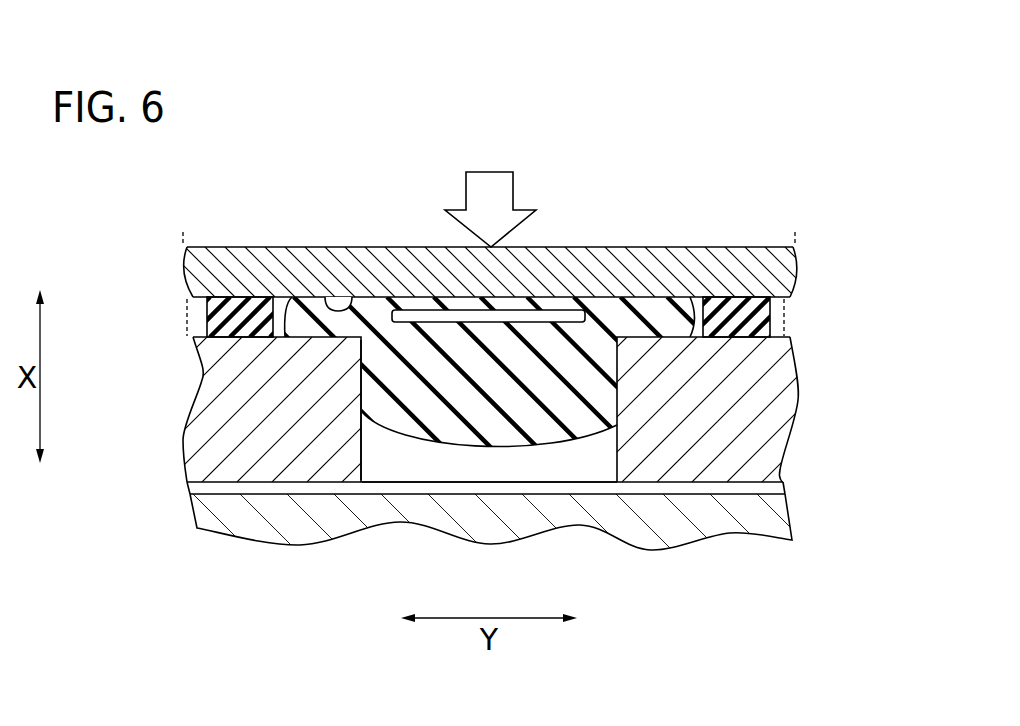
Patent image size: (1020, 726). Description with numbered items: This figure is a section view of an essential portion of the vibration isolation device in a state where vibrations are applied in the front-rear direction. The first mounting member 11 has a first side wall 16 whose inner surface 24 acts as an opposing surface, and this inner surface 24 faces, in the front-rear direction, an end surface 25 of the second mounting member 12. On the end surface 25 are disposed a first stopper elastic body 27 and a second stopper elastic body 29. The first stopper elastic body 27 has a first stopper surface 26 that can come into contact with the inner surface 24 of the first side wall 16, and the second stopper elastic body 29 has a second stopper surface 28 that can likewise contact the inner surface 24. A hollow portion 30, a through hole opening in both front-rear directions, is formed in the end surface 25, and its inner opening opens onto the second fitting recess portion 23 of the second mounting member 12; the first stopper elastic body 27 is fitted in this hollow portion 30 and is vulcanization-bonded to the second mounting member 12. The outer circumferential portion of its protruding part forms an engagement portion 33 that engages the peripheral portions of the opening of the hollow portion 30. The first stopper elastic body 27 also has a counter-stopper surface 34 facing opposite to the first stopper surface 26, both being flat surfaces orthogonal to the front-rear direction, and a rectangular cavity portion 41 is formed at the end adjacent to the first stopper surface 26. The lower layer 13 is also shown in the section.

The first mounting member 11 is at (565, 246).
The second mounting member 12 is at (797, 408).
The support substrate 13 is at (797, 518).
The first side wall 16 is at (611, 247).
The second fitting recess portion 23 is at (770, 502).
The inner surface 24 is at (334, 292).
The end surface 25 is at (199, 337).
The first stopper surface 26 is at (366, 325).
The first stopper elastic body 27 is at (350, 382).
The second stopper surface 28 is at (738, 296).
The second stopper elastic body 29 is at (246, 284).
The hollow portion 30 is at (362, 448).
The engagement portion 33 is at (668, 318).
The counter-stopper surface 34 is at (537, 447).
The cavity portion 41 is at (443, 318).